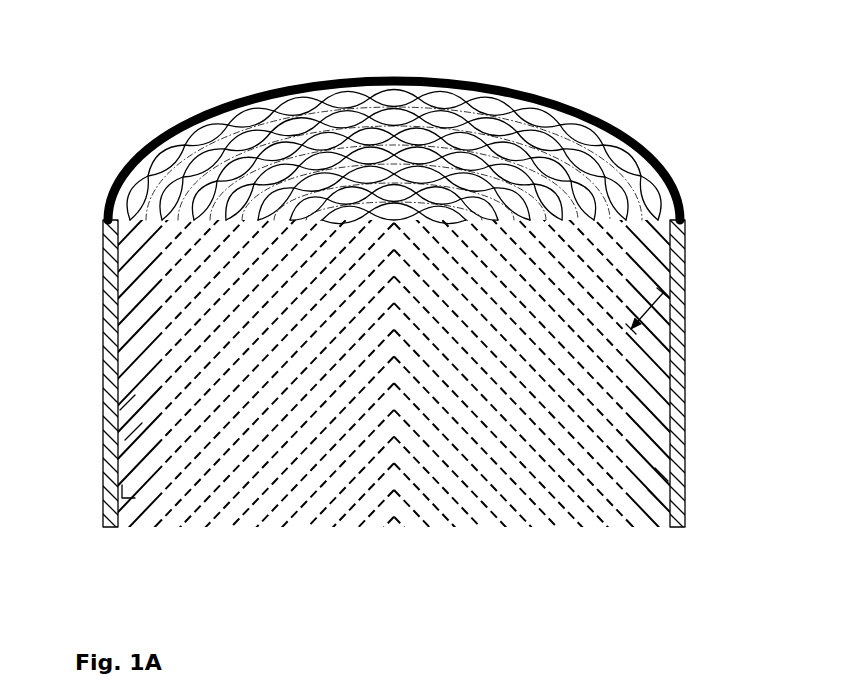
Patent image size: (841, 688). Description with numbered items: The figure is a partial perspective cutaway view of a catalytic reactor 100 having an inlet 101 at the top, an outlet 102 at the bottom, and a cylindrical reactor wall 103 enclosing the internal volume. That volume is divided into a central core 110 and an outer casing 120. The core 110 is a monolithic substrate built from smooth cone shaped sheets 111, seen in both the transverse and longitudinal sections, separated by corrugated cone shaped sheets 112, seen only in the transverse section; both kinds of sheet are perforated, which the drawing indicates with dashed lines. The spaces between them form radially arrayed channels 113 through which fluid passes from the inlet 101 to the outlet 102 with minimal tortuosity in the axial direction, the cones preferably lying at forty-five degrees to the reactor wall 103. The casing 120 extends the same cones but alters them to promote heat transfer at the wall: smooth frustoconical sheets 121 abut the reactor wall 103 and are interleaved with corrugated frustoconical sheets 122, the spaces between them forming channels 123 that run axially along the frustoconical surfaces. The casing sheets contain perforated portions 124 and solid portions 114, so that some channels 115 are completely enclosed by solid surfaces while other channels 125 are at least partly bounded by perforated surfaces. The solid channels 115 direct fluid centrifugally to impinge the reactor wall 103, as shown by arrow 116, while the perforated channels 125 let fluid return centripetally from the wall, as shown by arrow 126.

The catalytic reactor 100 is at (385, 344).
The inlet 101 is at (391, 29).
The outlet 102 is at (390, 636).
The cylindrical reactor wall 103 is at (142, 153).
The core 110 is at (628, 528).
The smooth cone shaped sheets 111 is at (333, 139).
The corrugated cone shaped sheets 112 is at (287, 165).
The channels 113 is at (240, 190).
The solid portions 114 is at (134, 413).
The solid channels 115 is at (141, 428).
The arrow 116 is at (135, 475).
The casing 120 is at (160, 528).
The smooth frustoconical sheets 121 is at (553, 123).
The corrugated frustoconical sheets 122 is at (575, 143).
The channels 123 is at (597, 157).
The perforated portions 124 is at (656, 462).
The perforated channels 125 is at (652, 485).
The arrow 126 is at (652, 328).